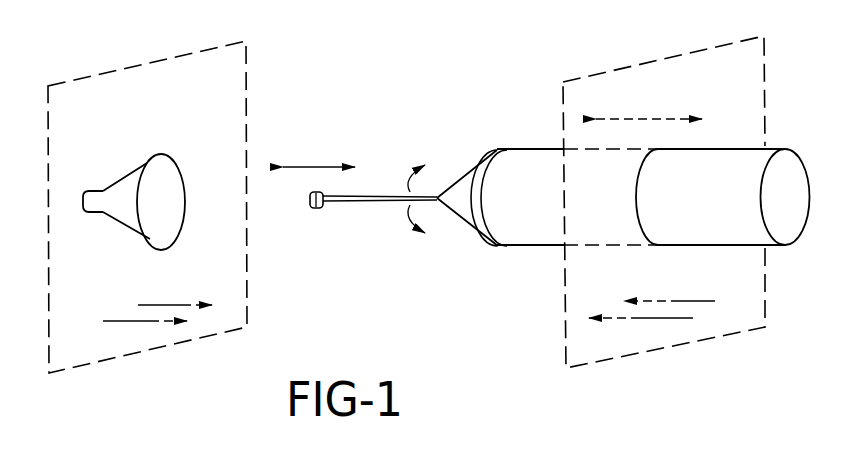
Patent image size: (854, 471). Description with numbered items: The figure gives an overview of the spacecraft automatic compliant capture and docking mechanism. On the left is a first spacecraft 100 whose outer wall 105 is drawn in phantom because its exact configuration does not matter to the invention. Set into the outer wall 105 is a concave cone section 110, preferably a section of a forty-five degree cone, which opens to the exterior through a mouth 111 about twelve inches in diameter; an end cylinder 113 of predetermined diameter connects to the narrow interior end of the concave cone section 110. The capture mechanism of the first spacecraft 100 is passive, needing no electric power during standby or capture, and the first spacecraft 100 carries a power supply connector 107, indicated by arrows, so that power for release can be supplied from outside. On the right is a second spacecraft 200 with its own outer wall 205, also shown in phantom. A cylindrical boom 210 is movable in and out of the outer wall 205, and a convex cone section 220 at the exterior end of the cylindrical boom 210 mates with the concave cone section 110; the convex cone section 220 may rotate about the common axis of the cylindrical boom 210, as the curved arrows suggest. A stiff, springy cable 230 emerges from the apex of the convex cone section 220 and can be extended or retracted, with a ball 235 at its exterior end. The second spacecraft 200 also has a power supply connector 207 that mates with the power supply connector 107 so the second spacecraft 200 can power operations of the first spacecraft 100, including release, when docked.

The first spacecraft 100 is at (162, 60).
The outer wall 105 is at (213, 103).
The power supply connector 107 is at (183, 275).
The concave cone section 110 is at (140, 163).
The mouth 111 is at (176, 208).
The end cylinder 113 is at (85, 190).
The second spacecraft 200 is at (634, 62).
The outer wall 205 is at (749, 95).
The power supply connector 207 is at (647, 318).
The cylindrical boom 210 is at (697, 245).
The convex cone section 220 is at (453, 173).
The cable 230 is at (380, 203).
The ball 235 is at (313, 208).